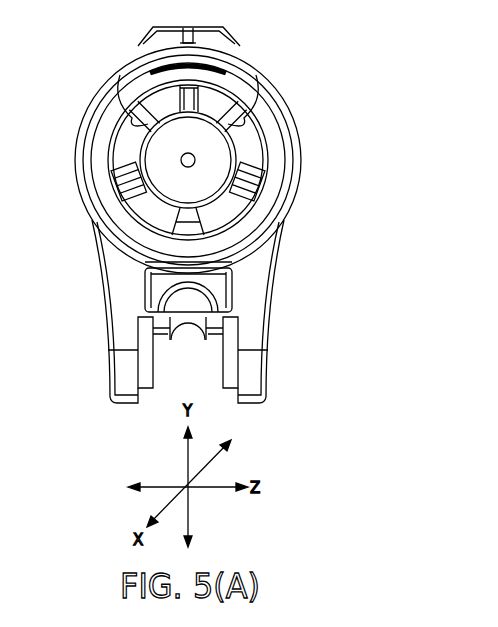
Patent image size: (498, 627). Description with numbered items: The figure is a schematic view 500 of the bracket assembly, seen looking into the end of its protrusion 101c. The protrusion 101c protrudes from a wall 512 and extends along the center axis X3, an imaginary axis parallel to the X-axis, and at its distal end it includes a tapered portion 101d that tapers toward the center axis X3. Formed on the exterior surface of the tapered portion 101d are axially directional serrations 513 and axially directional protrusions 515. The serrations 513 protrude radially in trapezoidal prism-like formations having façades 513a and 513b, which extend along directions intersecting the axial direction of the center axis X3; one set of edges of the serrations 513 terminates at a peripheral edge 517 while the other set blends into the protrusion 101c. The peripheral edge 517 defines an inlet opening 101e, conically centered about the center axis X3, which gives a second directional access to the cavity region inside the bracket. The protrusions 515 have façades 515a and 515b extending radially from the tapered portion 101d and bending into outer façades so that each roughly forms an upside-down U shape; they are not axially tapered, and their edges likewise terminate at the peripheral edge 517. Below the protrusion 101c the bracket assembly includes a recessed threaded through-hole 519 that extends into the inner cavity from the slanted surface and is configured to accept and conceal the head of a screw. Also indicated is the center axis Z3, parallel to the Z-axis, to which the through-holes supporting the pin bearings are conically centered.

The schematic view 500 is at (331, 81).
The axially directional serrations 513 is at (242, 81).
The wall 512 is at (107, 203).
The peripheral edge 517 is at (188, 112).
The tapered portion 101d is at (149, 107).
The protrusion 101c is at (132, 118).
The inlet opening 101e is at (207, 160).
The axially directional protrusions 515 is at (131, 126).
The façade 515a is at (103, 283).
The façade 515b is at (240, 305).
The recessed through-hole 519 is at (188, 287).
The façade 513a is at (262, 172).
The façade 513b is at (268, 246).
The center axis X3 is at (110, 243).
The center axis Z3 is at (300, 338).